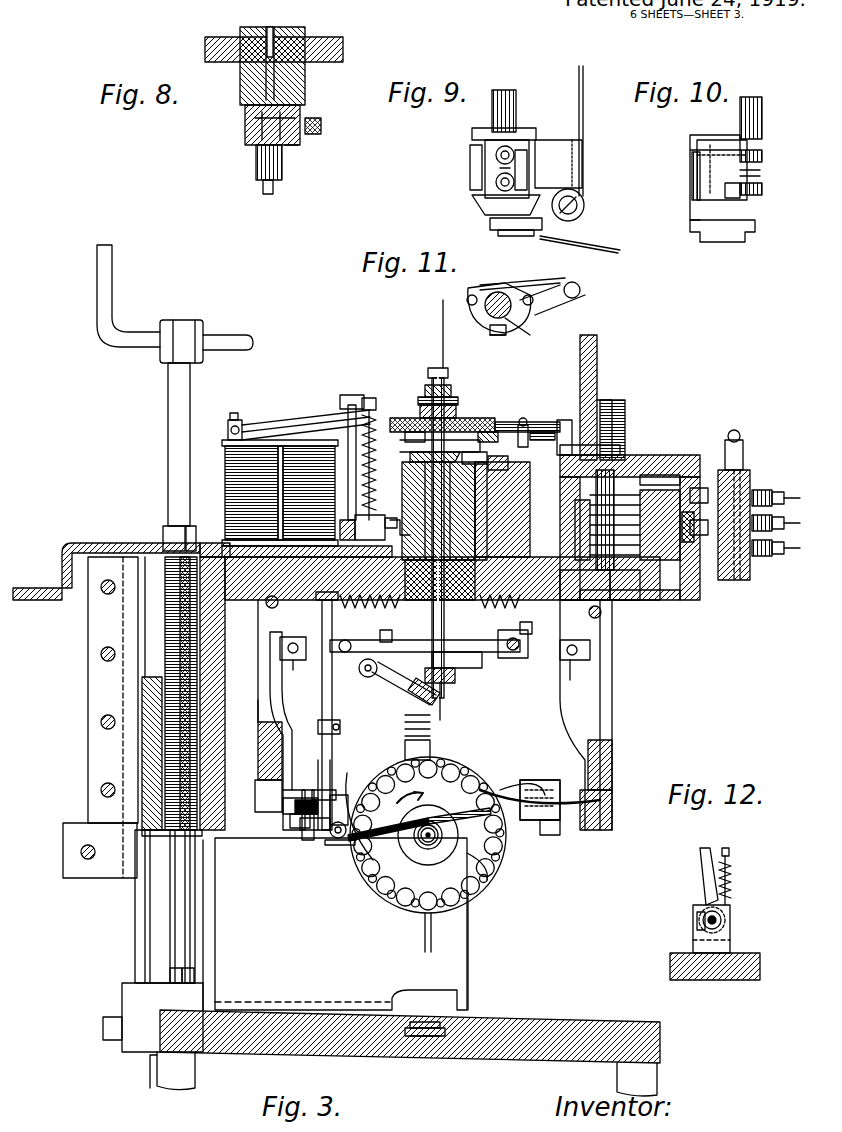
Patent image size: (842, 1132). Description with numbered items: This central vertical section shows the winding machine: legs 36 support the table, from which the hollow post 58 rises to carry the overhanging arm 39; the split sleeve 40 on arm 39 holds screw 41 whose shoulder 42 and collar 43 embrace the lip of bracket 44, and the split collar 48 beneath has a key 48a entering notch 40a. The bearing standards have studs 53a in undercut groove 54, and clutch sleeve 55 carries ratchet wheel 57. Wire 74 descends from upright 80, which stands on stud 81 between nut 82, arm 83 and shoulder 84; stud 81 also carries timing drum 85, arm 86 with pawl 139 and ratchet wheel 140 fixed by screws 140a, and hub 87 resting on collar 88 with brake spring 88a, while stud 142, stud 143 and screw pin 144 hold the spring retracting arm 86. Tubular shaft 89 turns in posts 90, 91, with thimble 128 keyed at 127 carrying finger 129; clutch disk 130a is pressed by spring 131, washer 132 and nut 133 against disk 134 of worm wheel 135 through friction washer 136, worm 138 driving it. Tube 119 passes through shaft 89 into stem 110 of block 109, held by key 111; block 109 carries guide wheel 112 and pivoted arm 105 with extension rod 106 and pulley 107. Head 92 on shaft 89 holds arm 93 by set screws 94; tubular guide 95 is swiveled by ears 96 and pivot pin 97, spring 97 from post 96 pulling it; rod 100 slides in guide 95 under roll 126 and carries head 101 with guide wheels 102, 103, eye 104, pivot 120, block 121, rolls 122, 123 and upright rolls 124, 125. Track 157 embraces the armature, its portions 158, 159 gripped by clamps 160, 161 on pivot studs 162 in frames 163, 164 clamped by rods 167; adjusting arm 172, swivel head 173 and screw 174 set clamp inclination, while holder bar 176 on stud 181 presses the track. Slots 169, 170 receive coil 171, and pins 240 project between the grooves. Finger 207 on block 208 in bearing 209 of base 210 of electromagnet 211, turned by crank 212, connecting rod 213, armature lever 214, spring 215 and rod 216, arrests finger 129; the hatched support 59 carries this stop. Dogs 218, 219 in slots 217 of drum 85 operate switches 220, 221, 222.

In FIG. 3, the legs 36 is at (180, 1078).
In FIG. 3, the overhanging arm 39 is at (442, 531).
In FIG. 3, the split sleeve 40 is at (212, 655).
In FIG. 3, the notch 40a is at (215, 800).
In FIG. 3, the screw 41 is at (135, 543).
In FIG. 3, the shoulder 42 is at (198, 550).
In FIG. 3, the collar 43 is at (165, 535).
In FIG. 3, the bracket 44 is at (90, 543).
In FIG. 3, the split collar 48 is at (215, 930).
In FIG. 3, the key 48a is at (232, 875).
In FIG. 3, the stud 53a is at (420, 1036).
In FIG. 3, the undercut groove 54 is at (433, 1036).
In FIG. 3, the clutch sleeve 55 is at (565, 1036).
In FIG. 3, the ratchet wheel 57 is at (465, 875).
In FIG. 3, the hollow post 58 is at (148, 908).
In FIG. 12, the frame arm support 59 is at (730, 975).
In FIG. 9, the wire 74 is at (582, 66).
In FIG. 3, the wire 74 is at (443, 306).
In FIG. 3, the upright 80 is at (597, 348).
In FIG. 3, the stud 81 is at (618, 405).
In FIG. 3, the nut 82 is at (625, 445).
In FIG. 3, the arm 83 is at (565, 420).
In FIG. 3, the shoulder 84 is at (636, 440).
In FIG. 3, the timing drum 85 is at (690, 478).
In FIG. 3, the arm 86 is at (495, 447).
In FIG. 3, the hub 87 is at (624, 530).
In FIG. 3, the collar 88 is at (645, 582).
In FIG. 3, the spring 88a is at (636, 525).
In FIG. 8, the tubular shaft 89 is at (262, 48).
In FIG. 3, the tubular shaft 89 is at (455, 512).
In FIG. 3, the hollow post 90 is at (500, 555).
In FIG. 3, the hollow post 91 is at (470, 668).
In FIG. 8, the block or head 92 is at (260, 136).
In FIG. 3, the block or head 92 is at (425, 653).
In FIG. 8, the horizontal arm 93 is at (291, 142).
In FIG. 3, the horizontal arm 93 is at (540, 668).
In FIG. 8, the set screws 94 is at (318, 122).
In FIG. 3, the set screws 94 is at (455, 678).
In FIG. 3, the tubular guide 95 is at (370, 614).
In FIG. 3, the ears / post 96 is at (460, 624).
In FIG. 3, the pivot pin / spring 97 is at (471, 619).
In FIG. 9, the rod 100 is at (507, 95).
In FIG. 10, the rod 100 is at (763, 112).
In FIG. 11, the rod 100 is at (483, 310).
In FIG. 3, the rod 100 is at (318, 760).
In FIG. 10, the head 101 is at (718, 153).
In FIG. 9, the guide wheel 102 is at (585, 205).
In FIG. 11, the guide wheel 102 is at (560, 300).
In FIG. 3, the guide wheel 102 is at (305, 814).
In FIG. 9, the guide wheel 103 is at (496, 229).
In FIG. 10, the guide wheel 103 is at (745, 240).
In FIG. 11, the guide wheel 103 is at (530, 328).
In FIG. 3, the guide wheel 103 is at (338, 838).
In FIG. 9, the wire guiding eye 104 is at (585, 153).
In FIG. 11, the wire guiding eye 104 is at (580, 287).
In FIG. 3, the wire guiding eye 104 is at (420, 796).
In FIG. 3, the arm 105 is at (410, 692).
In FIG. 3, the extension rod 106 is at (440, 700).
In FIG. 3, the guide pulley 107 is at (368, 677).
In FIG. 8, the block 109 is at (262, 155).
In FIG. 8, the hollow stem 110 is at (298, 96).
In FIG. 8, the key 111 is at (258, 118).
In FIG. 8, the guide wheel 112 is at (268, 194).
In FIG. 3, the guide wheel 112 is at (445, 700).
In FIG. 8, the tube 119 is at (297, 27).
In FIG. 3, the tube 119 is at (445, 385).
In FIG. 9, the pivot 120 is at (534, 169).
In FIG. 10, the pivot 120 is at (697, 188).
In FIG. 9, the block 121 is at (497, 170).
In FIG. 10, the block 121 is at (760, 172).
In FIG. 9, the antifriction roll 122 is at (475, 133).
In FIG. 10, the antifriction roll 122 is at (762, 150).
In FIG. 11, the antifriction roll 122 is at (497, 338).
In FIG. 3, the antifriction roll 122 is at (258, 730).
In FIG. 9, the antifriction roll 123 is at (475, 197).
In FIG. 10, the antifriction roll 123 is at (760, 193).
In FIG. 3, the antifriction roll 123 is at (256, 790).
In FIG. 9, the upright antifriction roll 124 is at (472, 156).
In FIG. 10, the upright antifriction roll 124 is at (742, 198).
In FIG. 11, the upright antifriction roll 124 is at (490, 287).
In FIG. 9, the upright antifriction roll 125 is at (540, 160).
In FIG. 11, the upright antifriction roll 125 is at (548, 285).
In FIG. 3, the upright antifriction roll 125 is at (350, 795).
In FIG. 3, the antifriction roll 126 is at (323, 640).
In FIG. 3, the key 127 is at (487, 460).
In FIG. 3, the thimble 128 is at (493, 511).
In FIG. 12, the stud / finger 129 is at (700, 914).
In FIG. 3, the stud / finger 129 is at (393, 518).
In FIG. 3, the friction clutch disk 130a is at (495, 424).
In FIG. 3, the spring 131 is at (420, 405).
In FIG. 3, the washer 132 is at (430, 397).
In FIG. 3, the nut 133 is at (432, 380).
In FIG. 3, the clutch disk 134 is at (400, 443).
In FIG. 3, the worm wheel 135 is at (412, 458).
In FIG. 3, the friction washer 136 is at (408, 430).
In FIG. 3, the worm 138 is at (490, 432).
In FIG. 3, the pawl 139 is at (506, 471).
In FIG. 3, the ratchet wheel 140 is at (698, 520).
In FIG. 3, the screws 140a is at (700, 488).
In FIG. 3, the stud 142 is at (550, 430).
In FIG. 3, the stud 143 is at (603, 383).
In FIG. 3, the screw pin 144 is at (523, 418).
In FIG. 3, the track 157 is at (490, 772).
In FIG. 3, the track side portion 158 is at (312, 830).
In FIG. 3, the track side portion 159 is at (535, 780).
In FIG. 3, the clamp 160 is at (290, 828).
In FIG. 3, the clamp 161 is at (555, 828).
In FIG. 3, the pivot studs 162 is at (612, 780).
In FIG. 3, the frame 163 is at (256, 712).
In FIG. 3, the frame 164 is at (612, 740).
In FIG. 3, the rod 167 is at (590, 610).
In FIG. 3, the slot 169 is at (340, 845).
In FIG. 3, the slot 170 is at (545, 820).
In FIG. 3, the coil 171 is at (390, 840).
In FIG. 3, the adjusting arm 172 is at (612, 700).
In FIG. 3, the swivel head 173 is at (590, 650).
In FIG. 3, the screw 174 is at (433, 677).
In FIG. 3, the holder rod or bar 176 is at (405, 748).
In FIG. 3, the headed stud 181 is at (401, 725).
In FIG. 12, the finger 207 is at (698, 926).
In FIG. 3, the finger 207 is at (320, 546).
In FIG. 3, the block 208 is at (364, 527).
In FIG. 12, the bearing 209 is at (730, 915).
In FIG. 3, the base 210 is at (240, 530).
In FIG. 3, the electromagnet 211 is at (224, 432).
In FIG. 12, the crank 212 is at (725, 925).
In FIG. 3, the crank 212 is at (300, 445).
In FIG. 12, the connecting rod 213 is at (700, 857).
In FIG. 3, the connecting rod 213 is at (348, 412).
In FIG. 3, the armature lever 214 is at (305, 410).
In FIG. 12, the spring 215 is at (731, 876).
In FIG. 3, the spring 215 is at (378, 400).
In FIG. 12, the rod 216 is at (729, 852).
In FIG. 3, the rod 216 is at (368, 400).
In FIG. 3, the circumferential slots 217 is at (718, 575).
In FIG. 3, the dog 218 is at (700, 512).
In FIG. 3, the dog 219 is at (748, 470).
In FIG. 3, the switch 220 is at (760, 490).
In FIG. 3, the switch 221 is at (778, 515).
In FIG. 3, the switch 222 is at (775, 556).
In FIG. 3, the pins or studs 240 is at (478, 764).